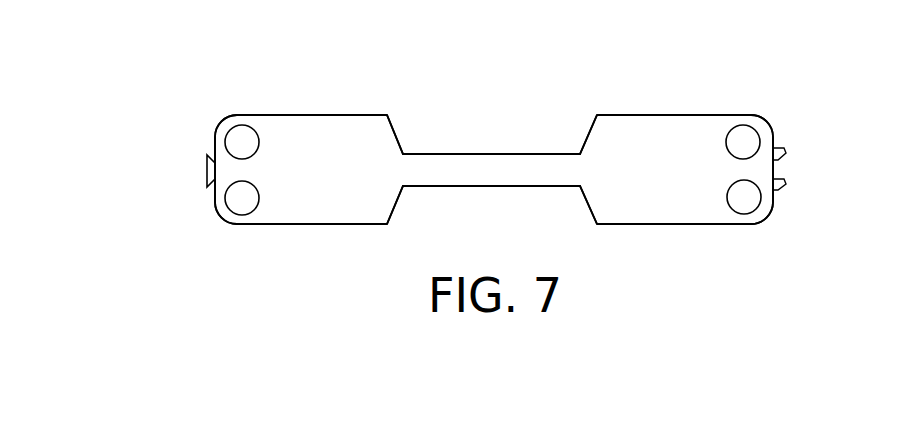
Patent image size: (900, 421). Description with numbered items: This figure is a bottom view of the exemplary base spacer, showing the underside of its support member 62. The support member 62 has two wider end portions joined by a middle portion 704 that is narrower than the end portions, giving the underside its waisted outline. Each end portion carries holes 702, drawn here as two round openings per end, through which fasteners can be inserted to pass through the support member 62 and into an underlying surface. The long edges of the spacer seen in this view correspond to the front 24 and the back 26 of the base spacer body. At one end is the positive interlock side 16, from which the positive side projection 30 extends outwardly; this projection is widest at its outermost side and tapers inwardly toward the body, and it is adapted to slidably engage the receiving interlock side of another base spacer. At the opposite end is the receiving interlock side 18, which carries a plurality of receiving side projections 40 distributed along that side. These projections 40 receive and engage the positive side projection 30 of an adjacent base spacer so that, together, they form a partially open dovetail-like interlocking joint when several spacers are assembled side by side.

The positive interlock side 16 is at (201, 137).
The receiving interlock side 18 is at (786, 132).
The front 24 is at (391, 242).
The back 26 is at (435, 113).
The positive side projection 30 is at (207, 170).
The receiving side projections 40 is at (786, 154).
The support member 62 is at (655, 130).
The holes 702 is at (243, 140).
The middle portion 704 is at (492, 147).